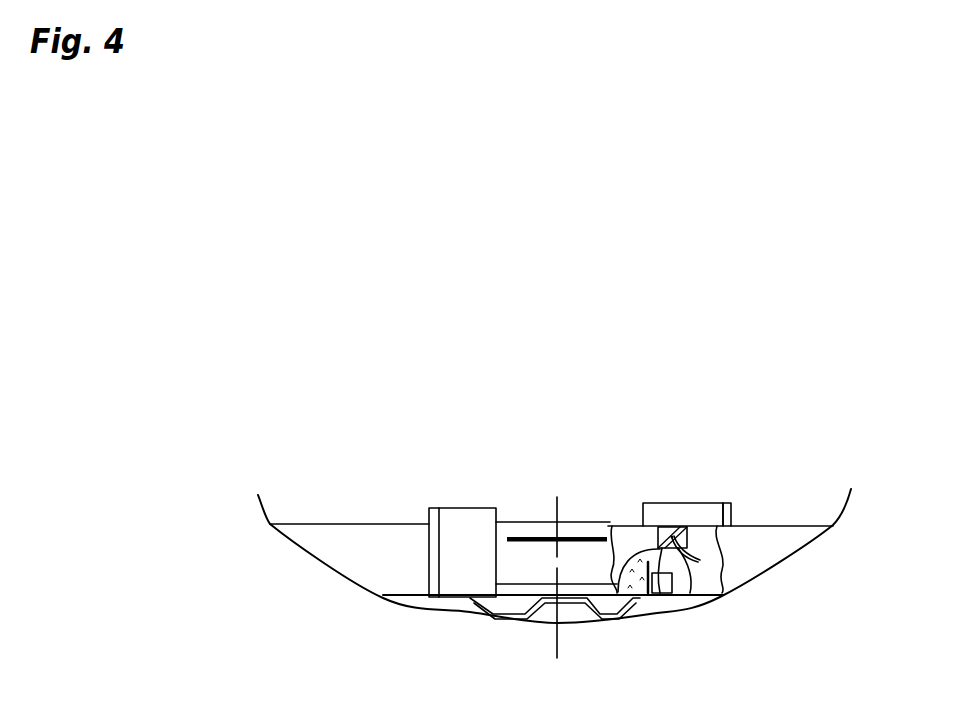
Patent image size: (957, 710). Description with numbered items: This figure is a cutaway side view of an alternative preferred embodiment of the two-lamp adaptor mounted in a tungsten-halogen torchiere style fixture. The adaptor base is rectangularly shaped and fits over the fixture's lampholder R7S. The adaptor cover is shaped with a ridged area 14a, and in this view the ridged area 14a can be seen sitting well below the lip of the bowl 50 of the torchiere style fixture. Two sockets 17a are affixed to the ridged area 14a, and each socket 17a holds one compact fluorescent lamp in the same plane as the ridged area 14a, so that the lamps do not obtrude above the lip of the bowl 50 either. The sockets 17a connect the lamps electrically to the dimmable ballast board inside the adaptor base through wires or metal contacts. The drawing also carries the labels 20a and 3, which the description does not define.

The bowl 50 is at (851, 489).
The ridged area 14a is at (360, 524).
The sockets 17a is at (463, 508).
The lamp support arm 20a is at (522, 522).
The lampholder R7S is at (688, 527).
The mounting bracket 3 is at (708, 598).